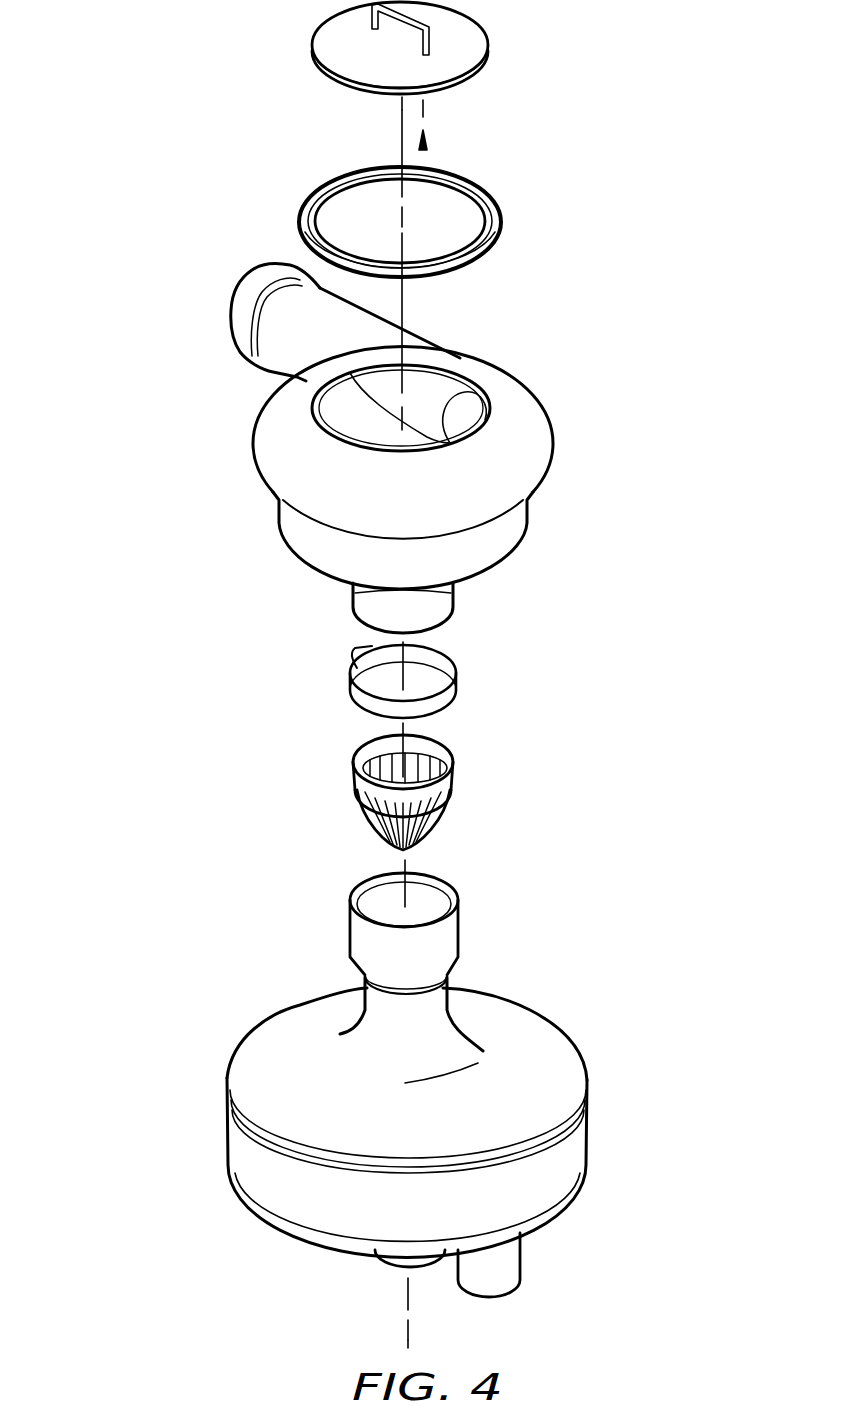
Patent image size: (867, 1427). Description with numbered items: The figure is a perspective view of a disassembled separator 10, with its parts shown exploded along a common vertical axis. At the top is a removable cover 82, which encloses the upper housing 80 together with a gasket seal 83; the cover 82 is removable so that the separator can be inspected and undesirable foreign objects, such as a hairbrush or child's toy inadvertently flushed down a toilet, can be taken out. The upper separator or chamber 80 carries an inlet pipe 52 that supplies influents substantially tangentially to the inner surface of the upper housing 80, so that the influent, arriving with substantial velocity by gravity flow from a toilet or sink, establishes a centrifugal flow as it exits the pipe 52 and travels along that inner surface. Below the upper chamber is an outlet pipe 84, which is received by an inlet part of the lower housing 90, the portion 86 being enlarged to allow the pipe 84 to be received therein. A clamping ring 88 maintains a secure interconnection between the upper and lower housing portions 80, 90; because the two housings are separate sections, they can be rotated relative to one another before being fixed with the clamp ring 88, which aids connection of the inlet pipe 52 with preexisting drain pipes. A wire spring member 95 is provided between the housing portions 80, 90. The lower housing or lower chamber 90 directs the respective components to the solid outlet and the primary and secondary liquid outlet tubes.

The separator 10 is at (153, 499).
The inlet pipe 52 is at (278, 356).
The upper separator 80 is at (434, 449).
The removable cover 82 is at (477, 43).
The gasket seal 83 is at (503, 213).
The outlet pipe 84 is at (362, 603).
The enlarged portion 86 is at (443, 940).
The clamping ring 88 is at (443, 698).
The lower housing 90 is at (461, 1085).
The wire spring member 95 is at (356, 810).